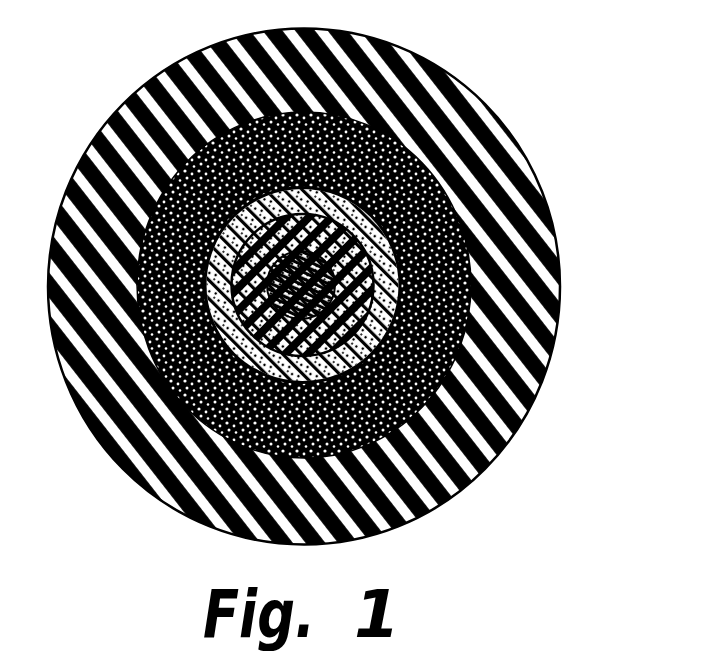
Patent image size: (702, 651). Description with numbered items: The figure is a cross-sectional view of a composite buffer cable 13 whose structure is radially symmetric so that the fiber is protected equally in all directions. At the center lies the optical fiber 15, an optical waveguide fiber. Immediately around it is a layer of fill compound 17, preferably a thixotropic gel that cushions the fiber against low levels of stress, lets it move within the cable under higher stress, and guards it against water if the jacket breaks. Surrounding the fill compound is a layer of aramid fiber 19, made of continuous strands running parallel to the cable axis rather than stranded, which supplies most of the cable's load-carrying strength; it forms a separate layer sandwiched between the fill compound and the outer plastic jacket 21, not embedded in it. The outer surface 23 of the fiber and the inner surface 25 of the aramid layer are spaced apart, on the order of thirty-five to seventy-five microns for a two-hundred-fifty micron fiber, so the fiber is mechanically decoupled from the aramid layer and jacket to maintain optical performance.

The composite buffer cable 13 is at (306, 287).
The optical fiber 15 is at (338, 284).
The layer of fill compound 17 is at (310, 273).
The layer of aramid fiber 19 is at (322, 169).
The plastic jacket 21 is at (328, 90).
The outer surface 23 is at (361, 285).
The inner surface 25 is at (290, 386).